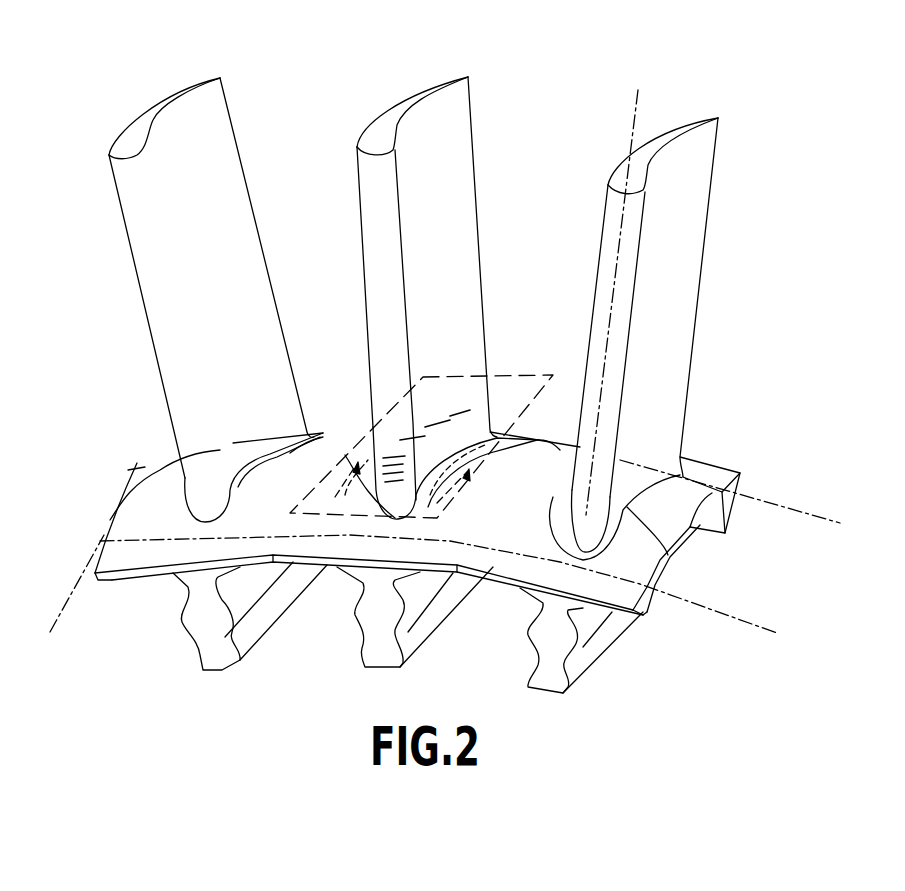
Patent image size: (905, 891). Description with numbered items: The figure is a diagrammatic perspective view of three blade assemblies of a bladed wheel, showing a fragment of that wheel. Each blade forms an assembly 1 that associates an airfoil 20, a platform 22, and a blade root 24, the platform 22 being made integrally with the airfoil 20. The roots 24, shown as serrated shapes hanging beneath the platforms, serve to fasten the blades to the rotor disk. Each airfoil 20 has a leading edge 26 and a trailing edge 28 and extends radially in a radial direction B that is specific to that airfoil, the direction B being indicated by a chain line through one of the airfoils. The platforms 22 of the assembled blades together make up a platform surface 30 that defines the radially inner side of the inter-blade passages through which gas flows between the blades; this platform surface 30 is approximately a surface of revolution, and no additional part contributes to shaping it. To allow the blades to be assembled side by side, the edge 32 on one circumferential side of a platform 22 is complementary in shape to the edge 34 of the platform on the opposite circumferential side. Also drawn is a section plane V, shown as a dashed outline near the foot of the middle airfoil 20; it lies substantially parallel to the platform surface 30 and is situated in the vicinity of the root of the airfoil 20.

The assembly 1 is at (422, 271).
The airfoil 20 is at (242, 288).
The platform 22 is at (152, 494).
The blade root 24 is at (258, 633).
The leading edge 26 is at (140, 248).
The trailing edge 28 is at (243, 161).
The platform surface 30 is at (687, 497).
The edge 32 is at (663, 567).
The edge 34 is at (105, 540).
The radial direction B is at (642, 97).
The section plane V is at (537, 397).